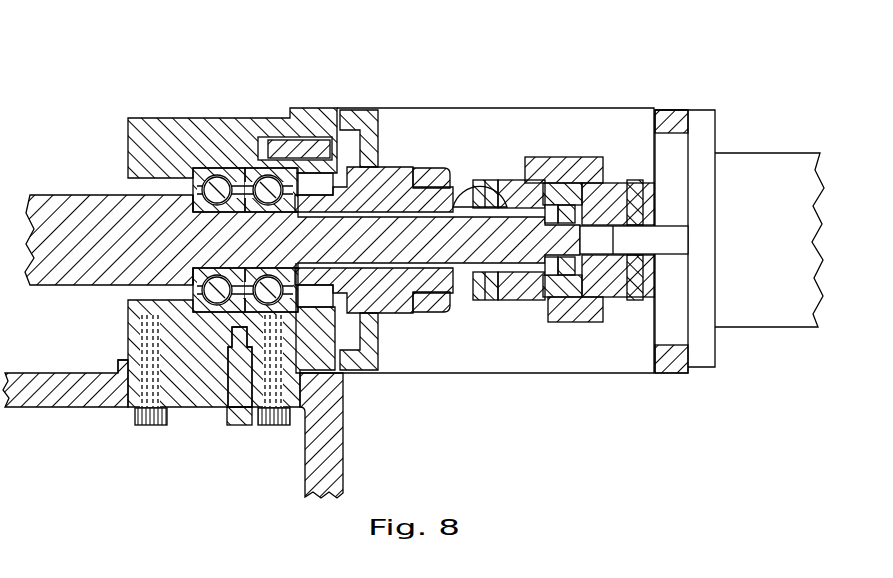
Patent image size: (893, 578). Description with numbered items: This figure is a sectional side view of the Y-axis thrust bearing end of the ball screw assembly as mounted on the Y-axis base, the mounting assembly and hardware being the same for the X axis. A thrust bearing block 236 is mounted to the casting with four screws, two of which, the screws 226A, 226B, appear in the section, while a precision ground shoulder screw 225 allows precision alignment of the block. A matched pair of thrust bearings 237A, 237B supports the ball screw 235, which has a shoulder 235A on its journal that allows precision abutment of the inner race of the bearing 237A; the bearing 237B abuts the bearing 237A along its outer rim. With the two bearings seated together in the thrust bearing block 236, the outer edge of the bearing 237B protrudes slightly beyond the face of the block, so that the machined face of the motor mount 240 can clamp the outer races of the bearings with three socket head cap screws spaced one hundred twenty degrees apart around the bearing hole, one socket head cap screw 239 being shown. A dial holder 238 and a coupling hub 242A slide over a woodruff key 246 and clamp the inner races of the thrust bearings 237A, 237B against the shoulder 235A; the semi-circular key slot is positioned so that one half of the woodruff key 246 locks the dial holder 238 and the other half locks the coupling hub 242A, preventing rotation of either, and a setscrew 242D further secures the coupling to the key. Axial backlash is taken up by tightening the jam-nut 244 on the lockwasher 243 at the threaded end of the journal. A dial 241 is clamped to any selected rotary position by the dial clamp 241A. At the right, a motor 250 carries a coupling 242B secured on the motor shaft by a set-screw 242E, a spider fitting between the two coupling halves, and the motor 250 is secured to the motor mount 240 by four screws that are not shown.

The ball screw 235 is at (47, 194).
The shoulder 235A is at (193, 207).
The thrust bearing block 236 is at (145, 127).
The thrust bearing 237A is at (217, 176).
The thrust bearing 237B is at (267, 172).
The socket head cap screw 239 is at (272, 137).
The dial 241 is at (350, 118).
The dial clamp 241A is at (437, 172).
The dial holder 238 is at (380, 195).
The woodruff key 246 is at (467, 203).
The setscrew 242D is at (488, 186).
The coupling hub 242A is at (542, 157).
The coupling 242B is at (578, 313).
The set-screw 242E is at (632, 203).
The lockwasher 243 is at (543, 268).
The jam-nut 244 is at (560, 273).
The motor mount 240 is at (423, 345).
The motor 250 is at (760, 314).
The precision ground shoulder screw 225 is at (227, 420).
The screw 226A is at (267, 427).
The screw 226B is at (145, 427).